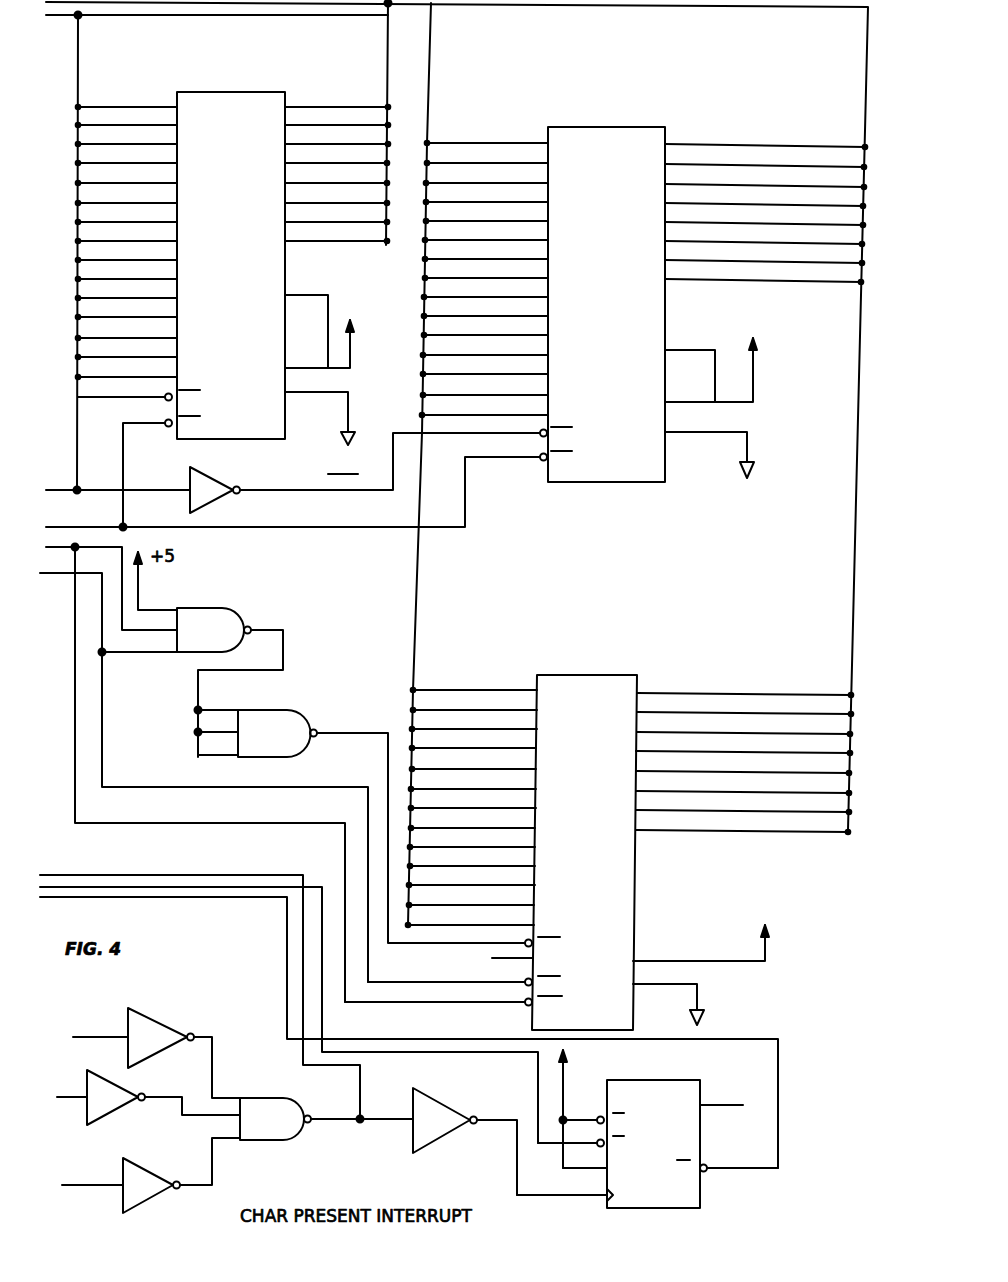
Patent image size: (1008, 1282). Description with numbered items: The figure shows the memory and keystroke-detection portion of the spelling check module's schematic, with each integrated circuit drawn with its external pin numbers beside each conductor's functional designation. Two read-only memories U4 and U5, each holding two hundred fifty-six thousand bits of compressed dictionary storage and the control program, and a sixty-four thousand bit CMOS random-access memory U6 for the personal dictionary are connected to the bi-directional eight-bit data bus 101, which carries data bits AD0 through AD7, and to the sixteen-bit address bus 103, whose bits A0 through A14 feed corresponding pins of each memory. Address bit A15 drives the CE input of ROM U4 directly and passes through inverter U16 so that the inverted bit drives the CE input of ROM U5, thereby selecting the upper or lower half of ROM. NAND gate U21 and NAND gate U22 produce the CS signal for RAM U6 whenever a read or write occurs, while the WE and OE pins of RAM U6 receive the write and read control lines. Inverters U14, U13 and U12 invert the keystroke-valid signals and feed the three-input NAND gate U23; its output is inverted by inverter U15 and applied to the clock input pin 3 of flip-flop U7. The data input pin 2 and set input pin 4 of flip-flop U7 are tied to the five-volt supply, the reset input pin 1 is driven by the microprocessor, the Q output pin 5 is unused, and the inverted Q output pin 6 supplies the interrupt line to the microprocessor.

The bi-directional 8-bit data bus 101 is at (640, 12).
The 16-bit address bus 103 is at (430, 77).
The read-only memory integrated circuit U4 is at (233, 310).
The read-only memory integrated circuit U5 is at (644, 303).
The CMOS random-access memory U6 is at (599, 851).
The flip-flop U7 is at (647, 1141).
The inverter U12 is at (156, 1053).
The inverter U13 is at (148, 1097).
The inverter U14 is at (151, 1176).
The inverter U15 is at (513, 1144).
The inverter U16 is at (296, 479).
The NAND gate U21 is at (207, 621).
The NAND gate U22 is at (269, 723).
The three input NAND gate U23 is at (314, 1120).
The reset input pin 1 is at (571, 1134).
The data input pin 2 is at (585, 1157).
The clock input pin 3 is at (561, 1183).
The set input pin 4 is at (583, 1110).
The Q output pin 5 is at (721, 1093).
The inverted Q output pin 6 is at (739, 1159).